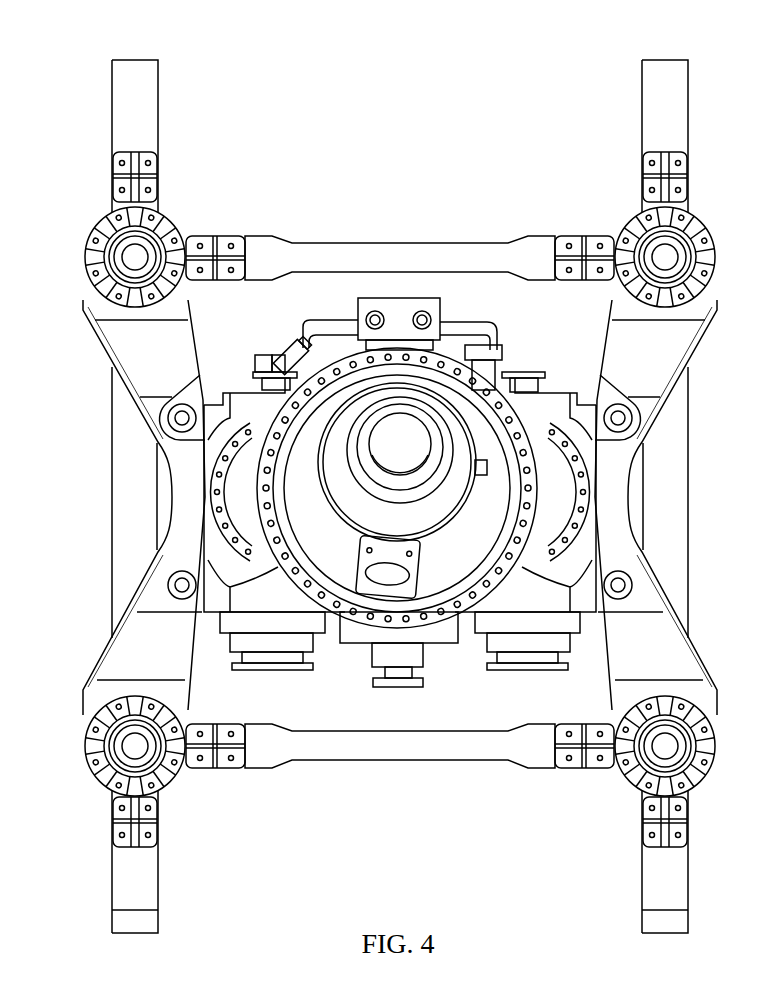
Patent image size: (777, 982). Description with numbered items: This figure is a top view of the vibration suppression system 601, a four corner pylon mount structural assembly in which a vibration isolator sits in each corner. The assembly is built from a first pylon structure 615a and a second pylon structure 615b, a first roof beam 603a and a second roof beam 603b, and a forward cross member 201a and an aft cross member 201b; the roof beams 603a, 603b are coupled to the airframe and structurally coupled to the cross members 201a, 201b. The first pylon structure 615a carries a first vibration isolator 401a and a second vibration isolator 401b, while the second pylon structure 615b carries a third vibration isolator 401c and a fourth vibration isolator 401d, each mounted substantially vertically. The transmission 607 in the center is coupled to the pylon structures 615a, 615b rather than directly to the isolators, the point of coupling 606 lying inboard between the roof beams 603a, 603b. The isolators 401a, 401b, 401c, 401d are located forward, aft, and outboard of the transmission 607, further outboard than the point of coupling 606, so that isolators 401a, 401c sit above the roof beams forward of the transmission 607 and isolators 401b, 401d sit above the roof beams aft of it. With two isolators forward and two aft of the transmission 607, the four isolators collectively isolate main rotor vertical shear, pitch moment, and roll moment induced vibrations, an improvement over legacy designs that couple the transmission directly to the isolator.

The vibration suppression system 601 is at (268, 52).
The first vibration isolator 401a is at (98, 228).
The second vibration isolator 401b is at (98, 782).
The third vibration isolator 401c is at (702, 228).
The fourth vibration isolator 401d is at (702, 782).
The forward cross member 201a is at (398, 238).
The aft cross member 201b is at (398, 766).
The first pylon structure 615a is at (114, 343).
The second pylon structure 615b is at (686, 343).
The first roof beam 603a is at (113, 482).
The second roof beam 603b is at (687, 482).
The point of coupling 606 is at (195, 405).
The transmission 607 is at (361, 563).